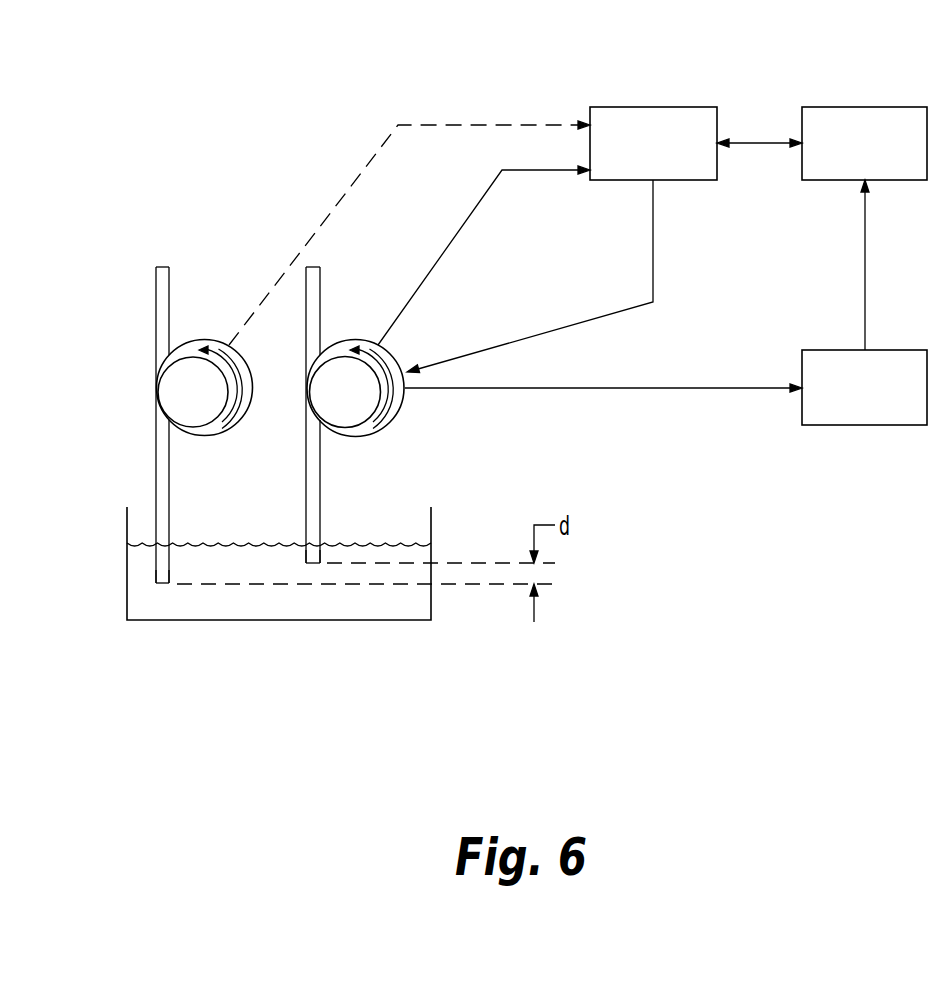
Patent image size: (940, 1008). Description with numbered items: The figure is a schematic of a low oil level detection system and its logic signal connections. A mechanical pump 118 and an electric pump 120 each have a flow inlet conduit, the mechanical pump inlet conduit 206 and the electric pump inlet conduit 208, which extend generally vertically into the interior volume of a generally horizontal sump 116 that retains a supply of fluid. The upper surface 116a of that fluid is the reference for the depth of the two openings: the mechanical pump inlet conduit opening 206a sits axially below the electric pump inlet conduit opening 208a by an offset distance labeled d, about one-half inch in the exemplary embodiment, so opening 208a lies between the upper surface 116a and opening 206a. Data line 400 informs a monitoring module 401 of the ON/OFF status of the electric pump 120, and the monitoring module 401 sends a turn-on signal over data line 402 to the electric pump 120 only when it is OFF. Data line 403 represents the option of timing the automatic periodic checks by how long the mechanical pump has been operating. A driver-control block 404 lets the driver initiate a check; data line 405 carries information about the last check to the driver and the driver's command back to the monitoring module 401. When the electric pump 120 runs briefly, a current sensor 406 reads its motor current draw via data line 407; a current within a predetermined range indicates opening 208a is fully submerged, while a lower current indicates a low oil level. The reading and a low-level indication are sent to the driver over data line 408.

The sump 116 is at (248, 608).
The upper surface 116a is at (218, 546).
The mechanical pump 118 is at (156, 390).
The electric pump 120 is at (349, 339).
The mechanical pump inlet conduit 206 is at (156, 498).
The mechanical pump inlet conduit opening 206a is at (162, 584).
The electric pump inlet conduit 208 is at (322, 525).
The electric pump inlet conduit opening 208a is at (312, 564).
The data line 400 is at (413, 293).
The monitoring module 401 is at (630, 107).
The data line 402 is at (557, 329).
The data line 403 is at (387, 142).
The driver-control block 404 is at (863, 107).
The data line 405 is at (753, 146).
The current sensor 406 is at (858, 426).
The data line 407 is at (583, 390).
The data line 408 is at (865, 282).